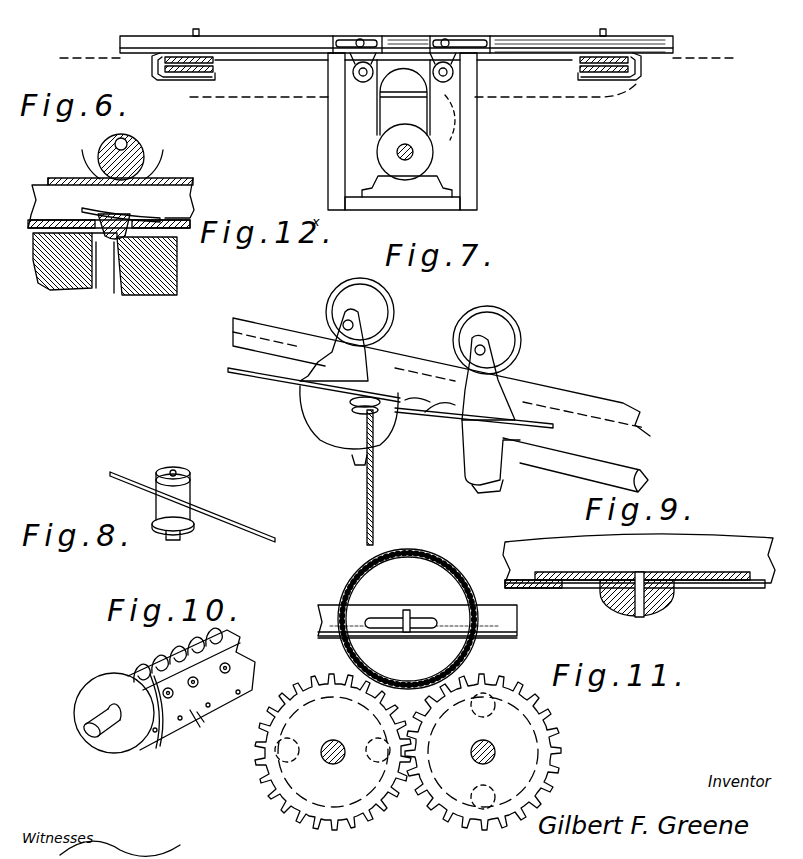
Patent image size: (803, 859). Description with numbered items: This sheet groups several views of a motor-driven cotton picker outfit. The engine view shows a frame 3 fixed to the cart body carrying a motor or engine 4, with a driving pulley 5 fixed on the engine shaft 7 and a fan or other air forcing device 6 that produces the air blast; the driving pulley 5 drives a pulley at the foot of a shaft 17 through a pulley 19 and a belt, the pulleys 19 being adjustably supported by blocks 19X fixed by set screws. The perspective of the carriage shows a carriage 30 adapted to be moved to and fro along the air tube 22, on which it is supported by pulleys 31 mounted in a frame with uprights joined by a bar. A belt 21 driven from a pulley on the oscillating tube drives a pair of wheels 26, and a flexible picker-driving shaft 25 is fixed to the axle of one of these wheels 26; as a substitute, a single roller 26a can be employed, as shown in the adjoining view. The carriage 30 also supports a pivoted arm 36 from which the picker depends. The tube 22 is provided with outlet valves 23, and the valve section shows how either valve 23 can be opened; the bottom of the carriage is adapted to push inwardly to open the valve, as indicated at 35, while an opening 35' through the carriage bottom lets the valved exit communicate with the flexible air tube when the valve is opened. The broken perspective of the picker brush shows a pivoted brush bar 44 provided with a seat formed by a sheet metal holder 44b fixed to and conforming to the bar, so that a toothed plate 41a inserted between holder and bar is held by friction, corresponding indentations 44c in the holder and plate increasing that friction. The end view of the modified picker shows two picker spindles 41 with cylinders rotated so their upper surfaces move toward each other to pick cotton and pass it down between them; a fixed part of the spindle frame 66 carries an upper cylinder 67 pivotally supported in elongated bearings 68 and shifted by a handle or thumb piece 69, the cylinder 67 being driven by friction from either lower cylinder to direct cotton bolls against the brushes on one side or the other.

In FIG. 6, the frame 3 is at (470, 152).
In FIG. 6, the motor or engine 4 is at (440, 182).
In FIG. 6, the driving pulley 5 is at (380, 152).
In FIG. 6, the fan or air forcing device 6 is at (445, 121).
In FIG. 6, the engine shaft 7 is at (407, 160).
In FIG. 6, the shaft 17 is at (200, 33).
In FIG. 6, the pulley 19 is at (353, 80).
In FIG. 6, the block 19X is at (372, 40).
In FIG. 7, the belt 21 is at (262, 380).
In FIG. 8, the belt 21 is at (225, 514).
In FIG. 12X, the air tube 22 is at (195, 203).
In FIG. 7, the air tube 22 is at (590, 396).
In FIG. 9, the air tube 22 is at (639, 554).
In FIG. 12X, the outlet valve 23 is at (125, 212).
In FIG. 9, the outlet valve 23 is at (637, 579).
In FIG. 7, the flexible picker-driving shaft 25 is at (386, 477).
In FIG. 7, the wheel 26 is at (355, 410).
In FIG. 8, the roller 26a is at (182, 475).
In FIG. 12X, the carriage 30 is at (99, 269).
In FIG. 7, the carriage 30 is at (410, 401).
In FIG. 12X, the pulley 31 is at (82, 156).
In FIG. 7, the pulley 31 is at (375, 290).
In FIG. 12X, the valve-opening bottom of the carriage 35 is at (153, 254).
In FIG. 12X, the opening 35' is at (97, 284).
In FIG. 7, the pivoted arm 36 is at (591, 465).
In FIG. 11, the picker spindle 41 is at (340, 765).
In FIG. 10, the toothed plate 41a is at (130, 668).
In FIG. 10, the brush bar 44 is at (164, 691).
In FIG. 10, the holder 44b is at (200, 727).
In FIG. 10, the indentation 44c is at (231, 668).
In FIG. 11, the fixed part of the picker or spindle frame 66 is at (510, 630).
In FIG. 11, the cylinder 67 is at (436, 576).
In FIG. 11, the elongated bearing 68 is at (422, 622).
In FIG. 11, the handle or thumb piece 69 is at (403, 615).